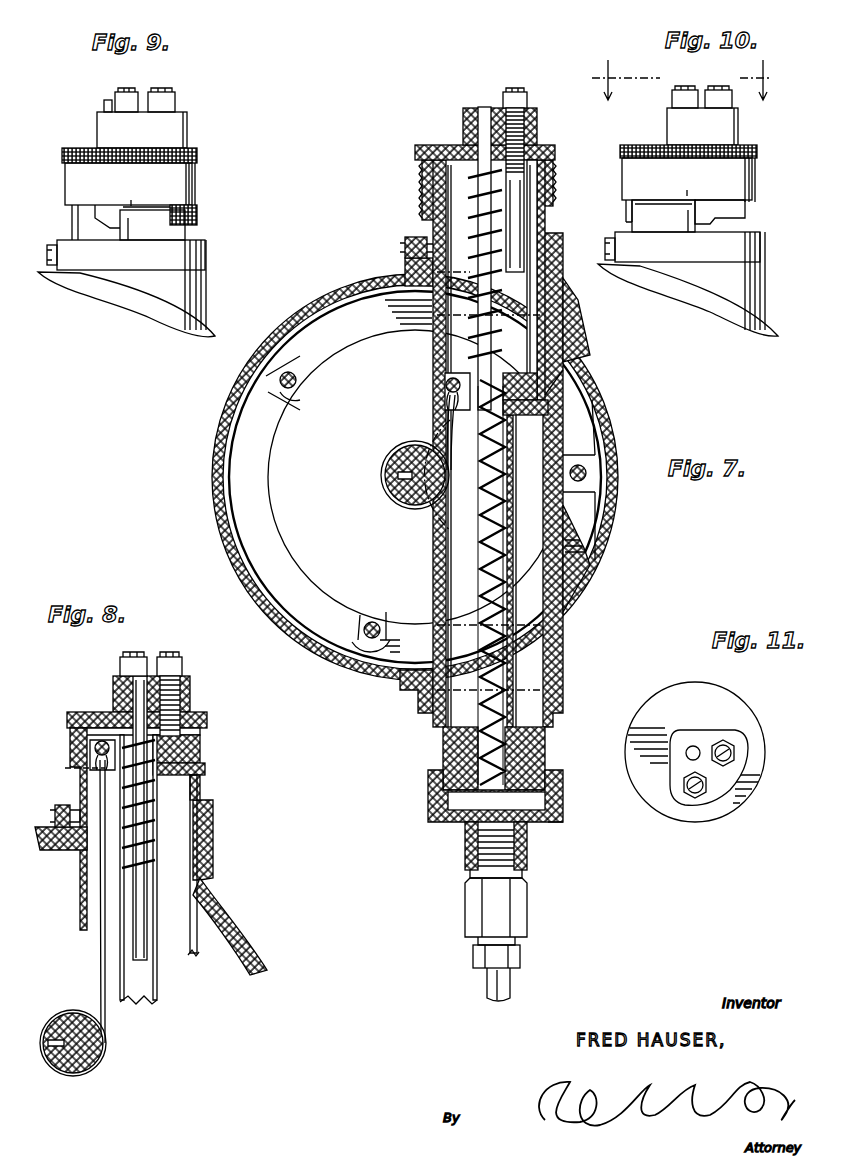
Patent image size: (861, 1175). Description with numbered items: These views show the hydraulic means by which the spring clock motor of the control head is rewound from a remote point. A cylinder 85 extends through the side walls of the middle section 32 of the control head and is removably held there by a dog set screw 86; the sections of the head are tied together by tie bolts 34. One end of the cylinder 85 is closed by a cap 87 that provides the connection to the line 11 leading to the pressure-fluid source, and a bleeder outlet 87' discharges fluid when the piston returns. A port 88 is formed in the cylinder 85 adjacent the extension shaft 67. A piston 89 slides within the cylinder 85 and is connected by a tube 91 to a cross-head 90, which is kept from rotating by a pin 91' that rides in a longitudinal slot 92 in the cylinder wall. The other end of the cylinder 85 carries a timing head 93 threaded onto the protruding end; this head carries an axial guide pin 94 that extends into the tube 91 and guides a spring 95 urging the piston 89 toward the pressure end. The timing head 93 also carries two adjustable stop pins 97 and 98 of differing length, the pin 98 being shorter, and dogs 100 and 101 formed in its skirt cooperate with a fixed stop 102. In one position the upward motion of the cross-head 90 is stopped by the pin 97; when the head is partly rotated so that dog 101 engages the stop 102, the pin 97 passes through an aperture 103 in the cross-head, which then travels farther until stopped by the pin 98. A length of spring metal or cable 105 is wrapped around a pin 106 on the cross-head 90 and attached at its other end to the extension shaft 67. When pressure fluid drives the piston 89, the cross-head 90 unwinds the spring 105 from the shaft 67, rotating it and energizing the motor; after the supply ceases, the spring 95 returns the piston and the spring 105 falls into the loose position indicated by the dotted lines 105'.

In FIG. 7, the line 11 is at (510, 990).
In FIG. 10, the line 11 is at (689, 72).
In FIG. 7, the middle section 32 is at (213, 455).
In FIG. 9, the middle section 32 is at (213, 330).
In FIG. 10, the middle section 32 is at (770, 322).
In FIG. 8, the middle section 32 is at (252, 928).
In FIG. 7, the tie bolt 34 is at (280, 378).
In FIG. 7, the extension shaft 67 is at (416, 450).
In FIG. 8, the extension shaft 67 is at (73, 1070).
In FIG. 7, the cylinder 85 is at (440, 735).
In FIG. 8, the cylinder 85 is at (86, 904).
In FIG. 7, the dog set screw 86 is at (408, 244).
In FIG. 9, the dog set screw 86 is at (50, 266).
In FIG. 10, the dog set screw 86 is at (610, 262).
In FIG. 8, the dog set screw 86 is at (60, 804).
In FIG. 7, the cap 87 is at (487, 809).
In FIG. 7, the bleeder outlet 87' is at (560, 829).
In FIG. 7, the port 88 is at (436, 547).
In FIG. 7, the piston 89 is at (530, 752).
In FIG. 7, the cross-head 90 is at (462, 272).
In FIG. 8, the cross-head 90 is at (201, 748).
In FIG. 7, the tube 91 is at (532, 443).
In FIG. 8, the tube 91 is at (151, 882).
In FIG. 7, the pin 91' is at (590, 382).
In FIG. 7, the longitudinal slot 92 is at (545, 310).
In FIG. 8, the longitudinal slot 92 is at (197, 940).
In FIG. 7, the timing head 93 is at (425, 145).
In FIG. 9, the timing head 93 is at (182, 140).
In FIG. 10, the timing head 93 is at (748, 158).
In FIG. 8, the timing head 93 is at (200, 712).
In FIG. 11, the timing head 93 is at (727, 704).
In FIG. 7, the axial guide pin 94 is at (487, 110).
In FIG. 9, the axial guide pin 94 is at (106, 104).
In FIG. 8, the axial guide pin 94 is at (136, 942).
In FIG. 11, the axial guide pin 94 is at (693, 746).
In FIG. 7, the spring 95 is at (470, 200).
In FIG. 8, the spring 95 is at (160, 860).
In FIG. 7, the stop pin 97 is at (520, 190).
In FIG. 9, the stop pin 97 is at (128, 92).
In FIG. 10, the stop pin 97 is at (718, 90).
In FIG. 8, the stop pin 97 is at (135, 690).
In FIG. 11, the stop pin 97 is at (697, 798).
In FIG. 9, the stop pin 98 is at (162, 92).
In FIG. 10, the stop pin 98 is at (685, 90).
In FIG. 8, the stop pin 98 is at (172, 682).
In FIG. 11, the stop pin 98 is at (735, 753).
In FIG. 9, the dog 100 is at (190, 212).
In FIG. 10, the dog 100 is at (720, 211).
In FIG. 9, the dog 101 is at (76, 210).
In FIG. 10, the dog 101 is at (627, 216).
In FIG. 9, the fixed stop 102 is at (140, 228).
In FIG. 10, the fixed stop 102 is at (680, 225).
In FIG. 7, the aperture 103 is at (540, 378).
In FIG. 8, the aperture 103 is at (70, 770).
In FIG. 7, the spring 105 is at (426, 413).
In FIG. 8, the spring 105 is at (76, 901).
In FIG. 7, the loose position of spring 105' is at (393, 461).
In FIG. 7, the pin 106 is at (456, 378).
In FIG. 8, the pin 106 is at (94, 748).